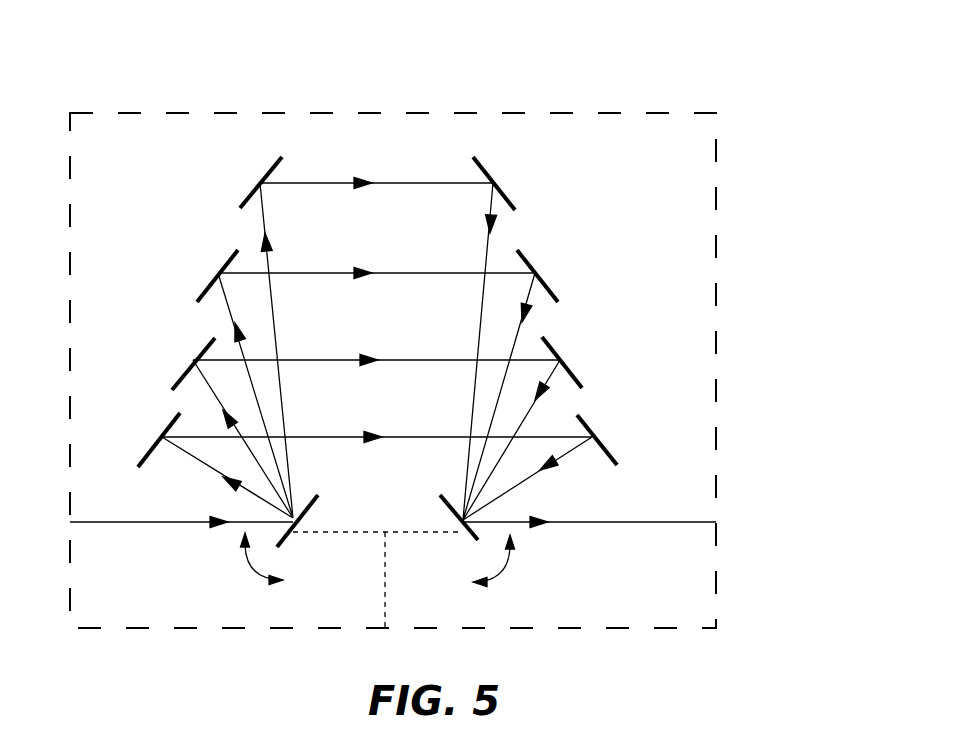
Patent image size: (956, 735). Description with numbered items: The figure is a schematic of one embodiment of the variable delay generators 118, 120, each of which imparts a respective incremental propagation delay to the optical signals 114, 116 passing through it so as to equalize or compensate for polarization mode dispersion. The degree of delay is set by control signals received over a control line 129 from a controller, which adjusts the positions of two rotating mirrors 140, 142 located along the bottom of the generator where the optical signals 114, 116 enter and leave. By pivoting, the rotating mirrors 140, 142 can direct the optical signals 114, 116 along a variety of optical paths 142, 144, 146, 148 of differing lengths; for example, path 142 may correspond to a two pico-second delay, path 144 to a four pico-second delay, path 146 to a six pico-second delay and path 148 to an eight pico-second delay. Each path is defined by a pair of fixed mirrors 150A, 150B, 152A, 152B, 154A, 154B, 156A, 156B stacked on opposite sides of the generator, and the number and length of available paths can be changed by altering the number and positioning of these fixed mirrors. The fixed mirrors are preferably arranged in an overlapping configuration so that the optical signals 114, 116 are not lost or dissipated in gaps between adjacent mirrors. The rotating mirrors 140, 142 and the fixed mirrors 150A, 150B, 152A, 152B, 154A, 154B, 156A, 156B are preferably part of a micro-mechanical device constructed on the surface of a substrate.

The optical signal 114 is at (181, 555).
The optical signal 116 is at (110, 525).
The variable delay generator 118 is at (455, 340).
The variable delay generator 120 is at (676, 104).
The control line 129 is at (387, 582).
The rotating mirror 140 is at (302, 515).
The rotating mirror 142 is at (458, 518).
The optical path 144 is at (414, 359).
The optical path 146 is at (412, 272).
The optical path 148 is at (412, 182).
The fixed mirror 150A is at (158, 443).
The fixed mirror 150B is at (598, 433).
The fixed mirror 152A is at (192, 362).
The fixed mirror 152B is at (570, 365).
The fixed mirror 154A is at (208, 282).
The fixed mirror 154B is at (550, 280).
The fixed mirror 156A is at (252, 190).
The fixed mirror 156B is at (512, 193).